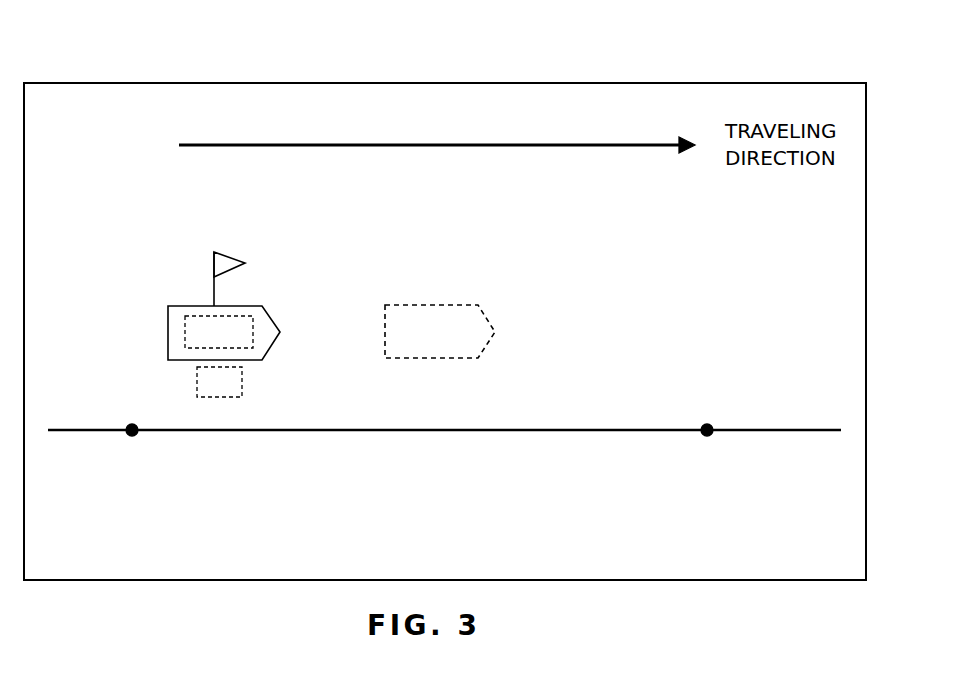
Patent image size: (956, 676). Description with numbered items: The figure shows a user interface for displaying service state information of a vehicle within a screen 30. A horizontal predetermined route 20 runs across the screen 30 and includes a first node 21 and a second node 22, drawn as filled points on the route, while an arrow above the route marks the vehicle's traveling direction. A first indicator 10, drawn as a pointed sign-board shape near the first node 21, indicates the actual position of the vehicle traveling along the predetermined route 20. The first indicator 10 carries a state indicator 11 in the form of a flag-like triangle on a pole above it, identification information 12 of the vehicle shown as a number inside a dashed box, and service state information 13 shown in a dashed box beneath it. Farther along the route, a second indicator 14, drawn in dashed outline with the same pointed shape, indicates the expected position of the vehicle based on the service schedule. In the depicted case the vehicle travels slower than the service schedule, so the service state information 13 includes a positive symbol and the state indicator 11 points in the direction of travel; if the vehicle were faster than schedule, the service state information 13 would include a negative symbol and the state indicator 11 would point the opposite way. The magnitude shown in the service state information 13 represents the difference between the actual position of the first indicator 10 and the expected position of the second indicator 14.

The screen 30 is at (80, 63).
The first indicator 10 is at (252, 302).
The state indicator 11 is at (230, 257).
The identification information 12 is at (185, 305).
The service state information 13 is at (197, 382).
The second indicator 14 is at (442, 304).
The predetermined route 20 is at (418, 432).
The first node 21 is at (132, 436).
The second node 22 is at (709, 436).